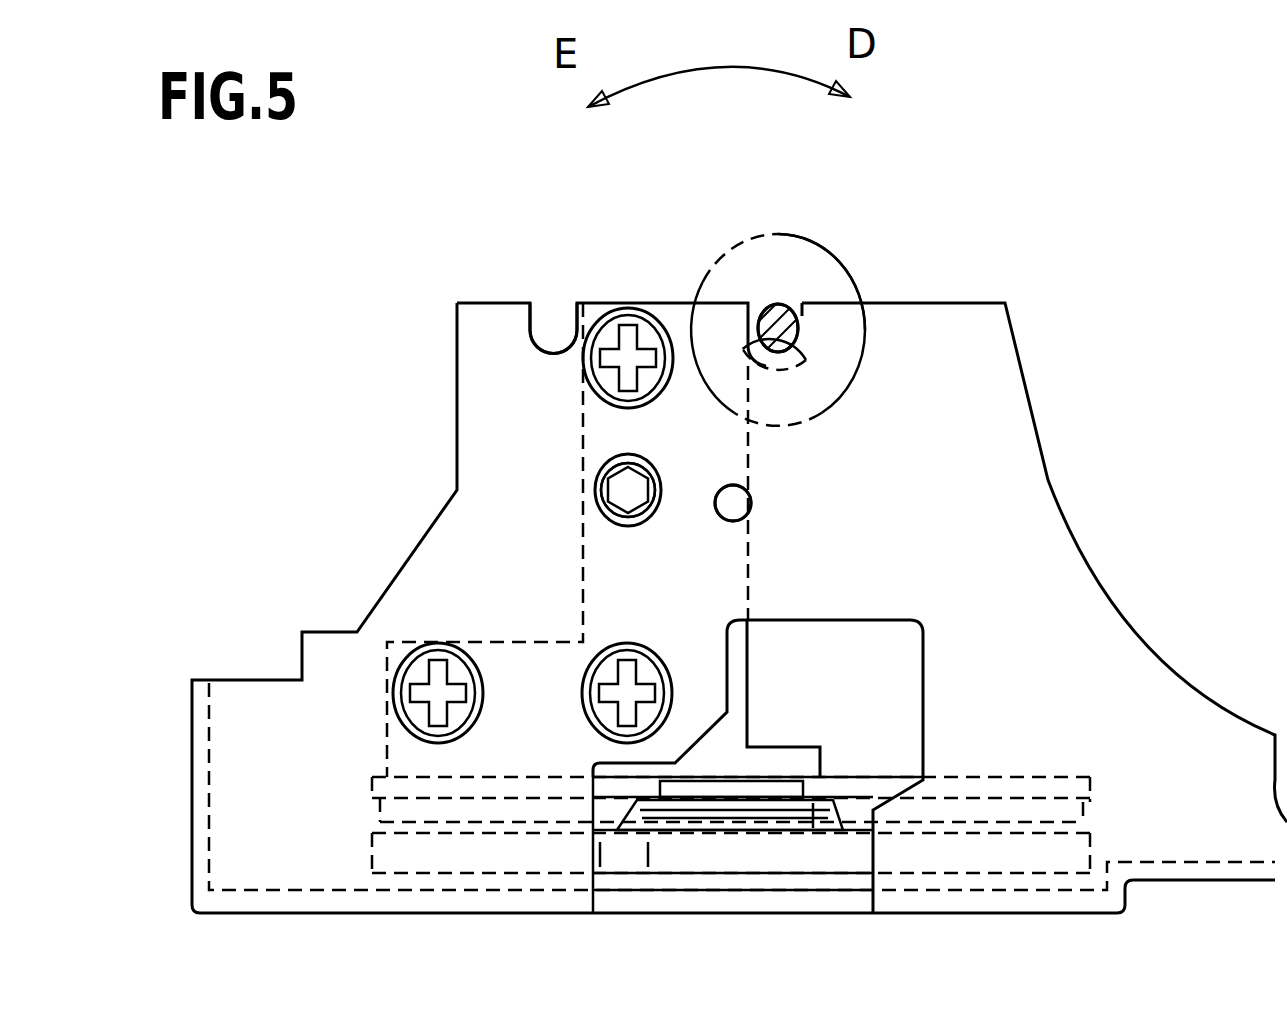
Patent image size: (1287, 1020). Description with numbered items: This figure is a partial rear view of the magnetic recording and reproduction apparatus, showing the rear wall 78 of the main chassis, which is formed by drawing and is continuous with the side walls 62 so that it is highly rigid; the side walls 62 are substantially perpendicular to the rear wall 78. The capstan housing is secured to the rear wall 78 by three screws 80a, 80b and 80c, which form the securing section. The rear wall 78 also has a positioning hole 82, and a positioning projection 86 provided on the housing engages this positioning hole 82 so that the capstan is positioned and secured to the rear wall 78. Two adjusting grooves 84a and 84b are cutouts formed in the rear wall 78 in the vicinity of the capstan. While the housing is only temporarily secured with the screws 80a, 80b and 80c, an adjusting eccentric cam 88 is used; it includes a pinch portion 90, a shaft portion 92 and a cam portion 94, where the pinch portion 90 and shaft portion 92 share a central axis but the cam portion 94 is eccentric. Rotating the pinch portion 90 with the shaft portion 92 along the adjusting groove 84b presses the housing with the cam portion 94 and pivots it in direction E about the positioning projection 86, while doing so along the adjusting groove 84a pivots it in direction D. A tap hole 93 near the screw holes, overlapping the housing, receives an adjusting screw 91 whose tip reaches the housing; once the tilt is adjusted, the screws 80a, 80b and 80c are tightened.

The side walls 62 is at (200, 727).
The rear wall 78 is at (998, 417).
The screw 80a is at (628, 330).
The screw 80b is at (407, 647).
The screw 80c is at (577, 637).
The positioning hole 82 is at (753, 502).
The adjusting groove 84a is at (547, 300).
The adjusting groove 84b is at (786, 330).
The positioning projection 86 is at (722, 508).
The adjusting eccentric cam 88 is at (765, 240).
The pinch portion 90 is at (800, 237).
The adjusting screw 91 is at (640, 467).
The shaft portion 92 is at (784, 338).
The tap hole 93 is at (623, 527).
The cam portion 94 is at (810, 337).